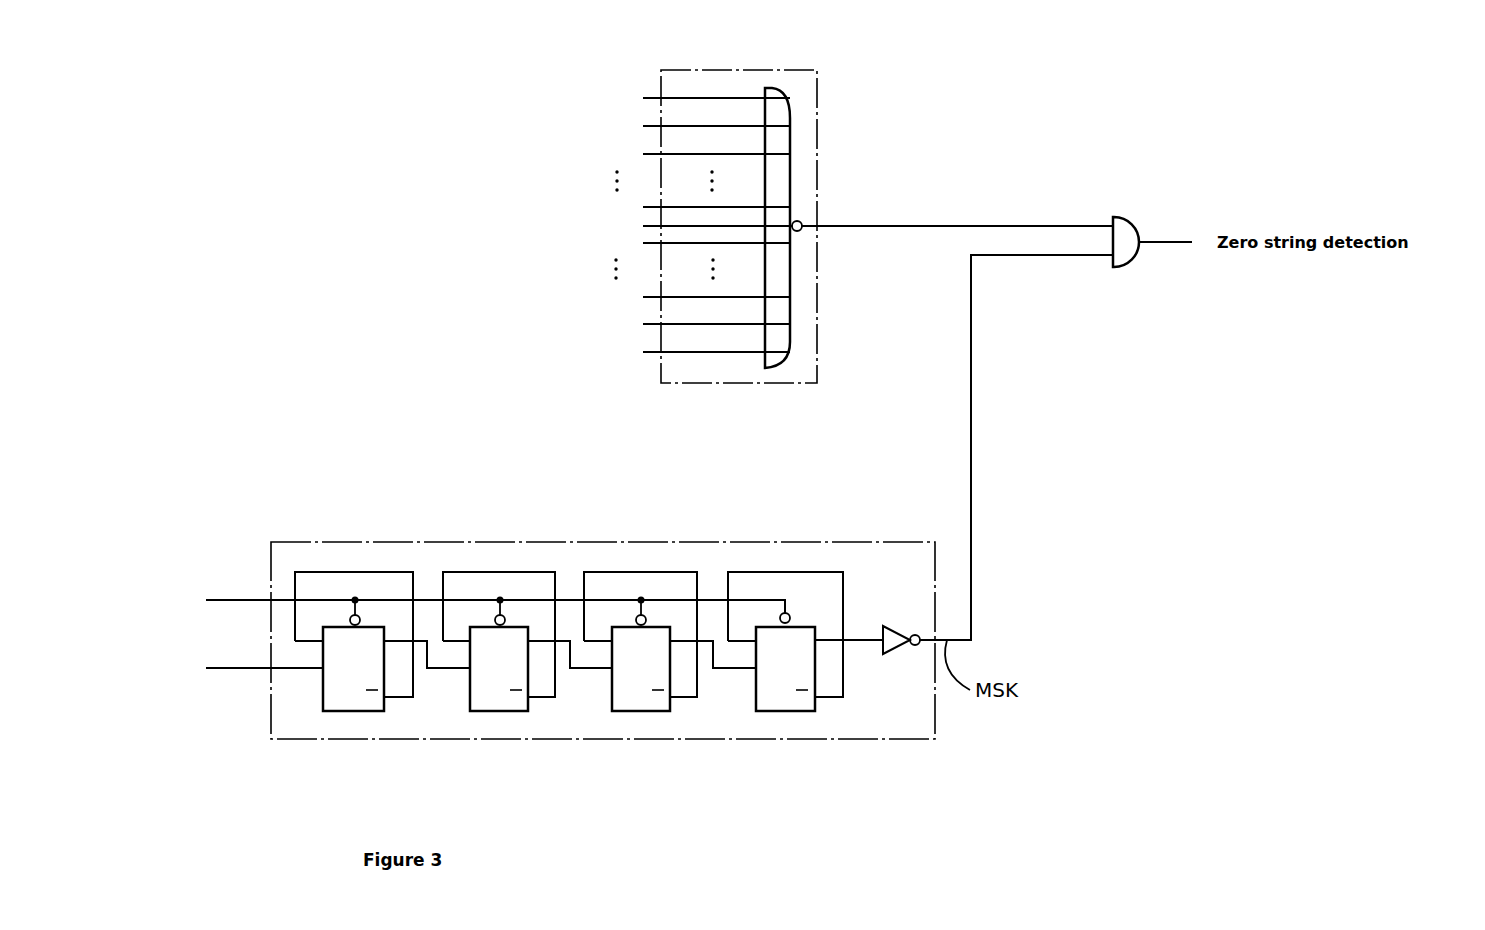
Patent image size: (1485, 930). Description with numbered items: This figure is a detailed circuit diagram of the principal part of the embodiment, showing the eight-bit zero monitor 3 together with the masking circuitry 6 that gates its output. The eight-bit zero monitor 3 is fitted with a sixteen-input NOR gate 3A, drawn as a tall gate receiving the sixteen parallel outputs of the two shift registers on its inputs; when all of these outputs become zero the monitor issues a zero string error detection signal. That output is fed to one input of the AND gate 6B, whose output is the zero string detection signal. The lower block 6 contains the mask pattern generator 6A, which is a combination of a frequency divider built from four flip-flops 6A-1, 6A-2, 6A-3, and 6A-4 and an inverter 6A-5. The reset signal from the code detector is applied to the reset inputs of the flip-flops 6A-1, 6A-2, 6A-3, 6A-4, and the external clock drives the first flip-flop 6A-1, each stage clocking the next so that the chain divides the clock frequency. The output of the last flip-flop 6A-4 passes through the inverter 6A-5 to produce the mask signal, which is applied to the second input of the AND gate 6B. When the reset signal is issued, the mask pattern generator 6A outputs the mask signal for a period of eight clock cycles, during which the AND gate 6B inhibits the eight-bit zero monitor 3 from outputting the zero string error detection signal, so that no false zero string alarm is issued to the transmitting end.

The eight-bit zero monitor 3 is at (737, 192).
The 16-input NOR gate 3A is at (790, 132).
The mask circuit 6 is at (690, 538).
The mask pattern generator 6A is at (483, 541).
The flip-flop 6A-1 is at (353, 711).
The flip-flop 6A-2 is at (500, 711).
The flip-flop 6A-3 is at (641, 711).
The flip-flop 6A-4 is at (785, 711).
The inverter 6A-5 is at (893, 653).
The AND gate 6B is at (1120, 216).